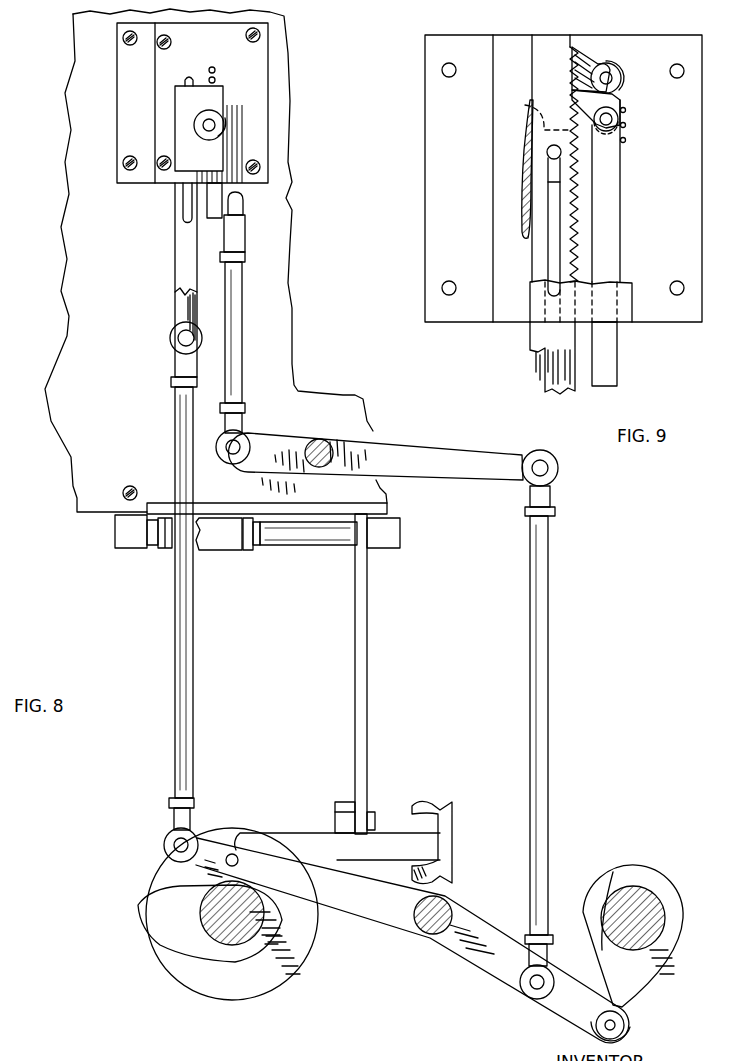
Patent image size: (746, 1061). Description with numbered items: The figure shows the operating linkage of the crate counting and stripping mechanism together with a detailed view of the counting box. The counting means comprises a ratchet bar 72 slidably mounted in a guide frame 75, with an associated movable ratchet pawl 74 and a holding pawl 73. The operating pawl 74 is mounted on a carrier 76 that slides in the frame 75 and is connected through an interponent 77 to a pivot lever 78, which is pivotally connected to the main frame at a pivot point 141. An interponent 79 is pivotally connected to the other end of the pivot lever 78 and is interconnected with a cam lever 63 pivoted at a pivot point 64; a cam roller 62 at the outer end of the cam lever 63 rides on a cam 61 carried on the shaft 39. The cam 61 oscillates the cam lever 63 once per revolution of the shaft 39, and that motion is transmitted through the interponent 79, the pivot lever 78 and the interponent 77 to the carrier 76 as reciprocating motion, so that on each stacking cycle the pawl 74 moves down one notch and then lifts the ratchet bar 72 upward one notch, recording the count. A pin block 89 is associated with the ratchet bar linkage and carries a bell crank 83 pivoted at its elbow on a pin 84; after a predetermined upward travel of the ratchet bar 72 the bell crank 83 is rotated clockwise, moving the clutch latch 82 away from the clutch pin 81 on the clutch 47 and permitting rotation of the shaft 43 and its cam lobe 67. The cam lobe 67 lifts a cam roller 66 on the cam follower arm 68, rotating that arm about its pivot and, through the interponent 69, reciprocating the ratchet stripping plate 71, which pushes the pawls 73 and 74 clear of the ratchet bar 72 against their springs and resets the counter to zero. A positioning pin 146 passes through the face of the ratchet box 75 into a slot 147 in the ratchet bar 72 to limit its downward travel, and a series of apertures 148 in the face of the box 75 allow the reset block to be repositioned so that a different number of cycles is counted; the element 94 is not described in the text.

In FIG. 8, the shaft 39 is at (665, 915).
In FIG. 8, the shaft 43 is at (200, 913).
In FIG. 8, the clutch 47 is at (266, 990).
In FIG. 8, the cam 61 is at (655, 975).
In FIG. 8, the cam roller 62 is at (626, 1030).
In FIG. 8, the cam lever 63 is at (532, 992).
In FIG. 8, the pivot point 64 is at (452, 908).
In FIG. 8, the cam roller 66 is at (236, 848).
In FIG. 8, the cam lobe 67 is at (138, 930).
In FIG. 8, the cam follower arm 68 is at (380, 918).
In FIG. 8, the interponent 69 is at (190, 660).
In FIG. 8, the ratchet stripping plate 71 is at (175, 318).
In FIG. 9, the ratchet stripping plate 71 is at (540, 108).
In FIG. 8, the ratchet bar 72 is at (175, 254).
In FIG. 9, the ratchet bar 72 is at (562, 38).
In FIG. 9, the holding pawl 73 is at (598, 62).
In FIG. 9, the ratchet pawl 74 is at (614, 100).
In FIG. 8, the guide frame 75 is at (263, 68).
In FIG. 9, the guide frame 75 is at (425, 102).
In FIG. 8, the carrier 76 is at (211, 220).
In FIG. 9, the carrier 76 is at (618, 362).
In FIG. 8, the interponent 77 is at (245, 343).
In FIG. 8, the pivot lever 78 is at (433, 446).
In FIG. 8, the interponent 79 is at (530, 672).
In FIG. 8, the clutch pin 81 is at (400, 840).
In FIG. 8, the clutch latch 82 is at (335, 818).
In FIG. 8, the bell crank 83 is at (365, 690).
In FIG. 8, the pin 84 is at (290, 548).
In FIG. 8, the pin block 89 is at (203, 550).
In FIG. 8, the pin 94 is at (219, 128).
In FIG. 8, the pivot point 141 is at (318, 438).
In FIG. 9, the positioning pin 146 is at (548, 150).
In FIG. 8, the slot 147 is at (189, 76).
In FIG. 9, the slot 147 is at (548, 182).
In FIG. 8, the apertures 148 is at (214, 68).